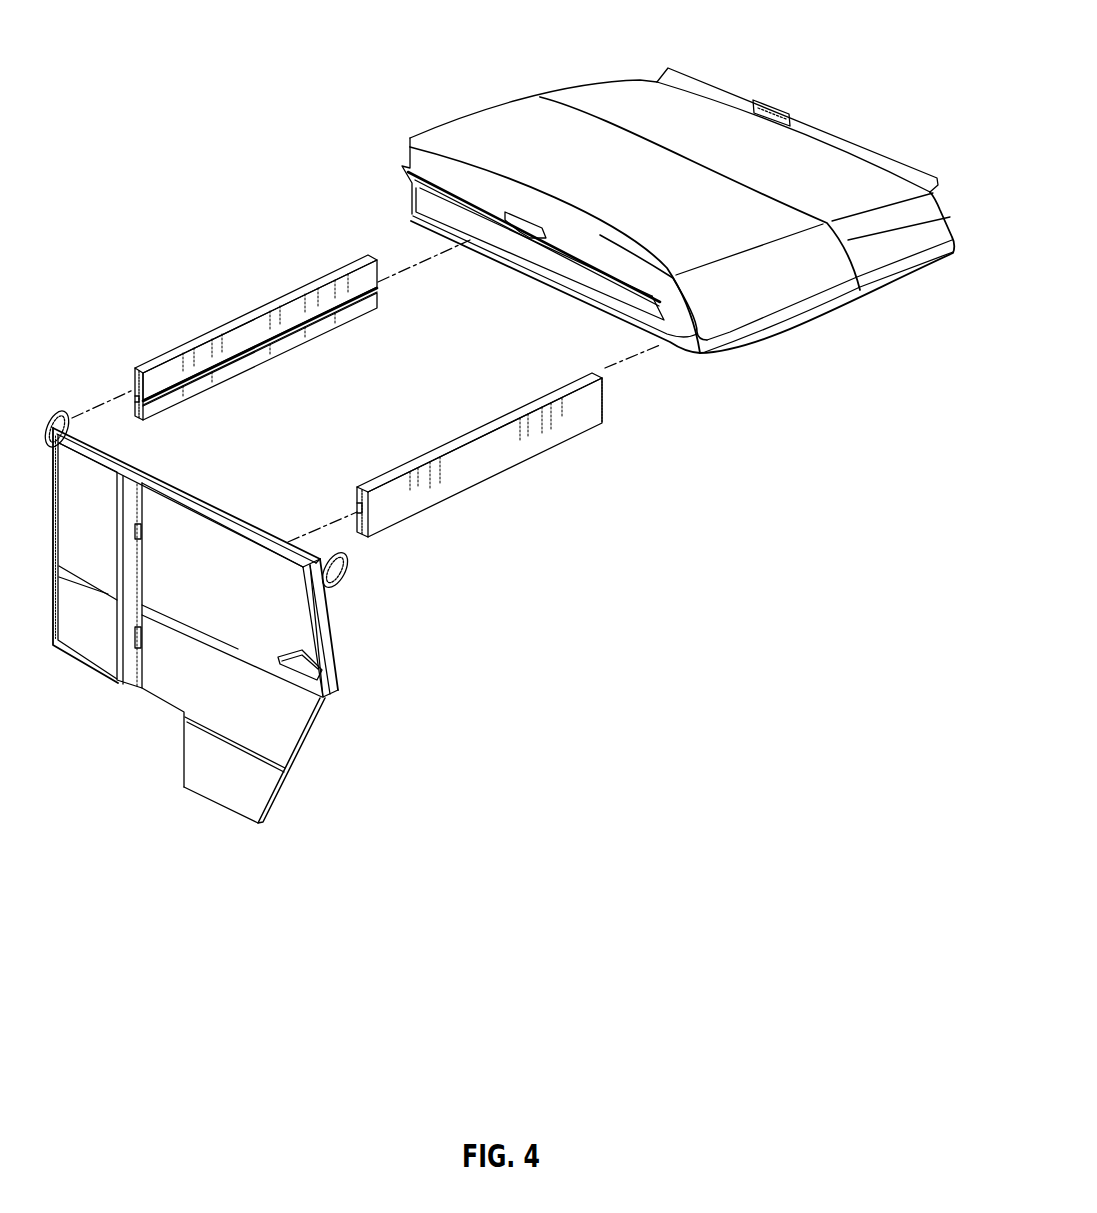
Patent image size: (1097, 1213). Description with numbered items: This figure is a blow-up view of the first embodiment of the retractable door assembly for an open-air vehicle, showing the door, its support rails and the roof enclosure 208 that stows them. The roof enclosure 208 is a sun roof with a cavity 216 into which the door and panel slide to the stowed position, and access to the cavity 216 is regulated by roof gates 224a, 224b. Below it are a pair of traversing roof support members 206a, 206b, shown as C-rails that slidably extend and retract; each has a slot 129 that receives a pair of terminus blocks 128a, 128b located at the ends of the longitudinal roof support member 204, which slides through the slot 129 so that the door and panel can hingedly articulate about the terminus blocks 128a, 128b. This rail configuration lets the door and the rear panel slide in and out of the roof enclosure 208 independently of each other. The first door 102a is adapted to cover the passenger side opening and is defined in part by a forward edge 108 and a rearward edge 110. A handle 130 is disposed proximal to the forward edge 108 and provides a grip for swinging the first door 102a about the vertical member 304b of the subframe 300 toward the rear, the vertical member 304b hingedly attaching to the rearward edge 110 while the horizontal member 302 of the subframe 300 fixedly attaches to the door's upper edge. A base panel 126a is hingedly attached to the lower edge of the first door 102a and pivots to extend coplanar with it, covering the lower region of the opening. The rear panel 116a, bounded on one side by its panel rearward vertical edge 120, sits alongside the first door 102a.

The roof enclosure 208 is at (560, 85).
The roof gate 224b is at (740, 97).
The roof gate 224a is at (528, 223).
The cavity 216 is at (566, 271).
The traversing roof support member 206a is at (252, 320).
The slot 129 is at (234, 352).
The traversing roof support member 206b is at (520, 453).
The terminus block 128a is at (57, 415).
The terminus block 128b is at (346, 571).
The longitudinal roof support member 204 is at (204, 499).
The horizontal member 302 is at (258, 543).
The vertical member 304b is at (330, 642).
The subframe 300 is at (345, 612).
The panel rearward vertical edge 120 is at (58, 600).
The rear panel 116a is at (88, 561).
The rearward edge 110 is at (130, 686).
The first door 102a is at (232, 635).
The base panel 126a is at (234, 770).
The forward edge 108 is at (292, 768).
The handle 130 is at (338, 688).